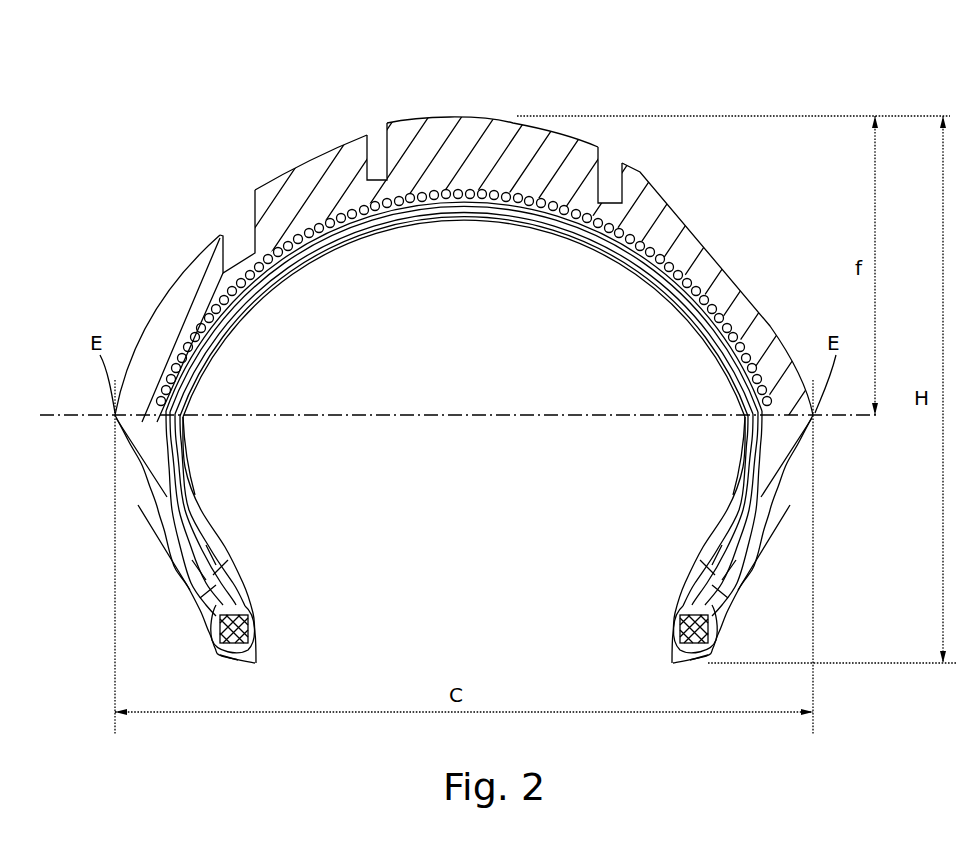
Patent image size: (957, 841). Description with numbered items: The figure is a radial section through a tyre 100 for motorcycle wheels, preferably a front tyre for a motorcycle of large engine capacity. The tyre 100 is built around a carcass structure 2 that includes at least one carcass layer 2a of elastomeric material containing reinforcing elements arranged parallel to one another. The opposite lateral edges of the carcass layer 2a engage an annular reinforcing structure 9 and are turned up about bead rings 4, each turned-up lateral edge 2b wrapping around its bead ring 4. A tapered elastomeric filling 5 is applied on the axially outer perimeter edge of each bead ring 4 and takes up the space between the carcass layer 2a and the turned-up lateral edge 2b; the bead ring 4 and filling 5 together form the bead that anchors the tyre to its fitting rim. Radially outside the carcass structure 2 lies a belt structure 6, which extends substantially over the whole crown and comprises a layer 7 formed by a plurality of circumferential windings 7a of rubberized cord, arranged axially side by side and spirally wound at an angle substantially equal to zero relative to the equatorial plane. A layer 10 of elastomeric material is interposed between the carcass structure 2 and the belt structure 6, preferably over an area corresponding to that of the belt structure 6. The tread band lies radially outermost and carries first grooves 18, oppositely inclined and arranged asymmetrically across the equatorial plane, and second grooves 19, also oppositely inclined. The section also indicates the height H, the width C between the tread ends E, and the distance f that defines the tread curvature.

The tyre 100 is at (224, 148).
The carcass structure 2 is at (774, 461).
The carcass layer 2a is at (757, 452).
The turned-up lateral edge 2b is at (163, 548).
The bead ring 4 is at (212, 615).
The tapered elastomeric filling 5 is at (212, 562).
The belt structure 6 is at (156, 433).
The layer 7 is at (418, 190).
The circumferential windings 7a is at (473, 170).
The annular reinforcing structure 9 is at (703, 543).
The layer of elastomeric material 10 is at (280, 302).
The first grooves 18 is at (377, 150).
The second grooves 19 is at (240, 234).